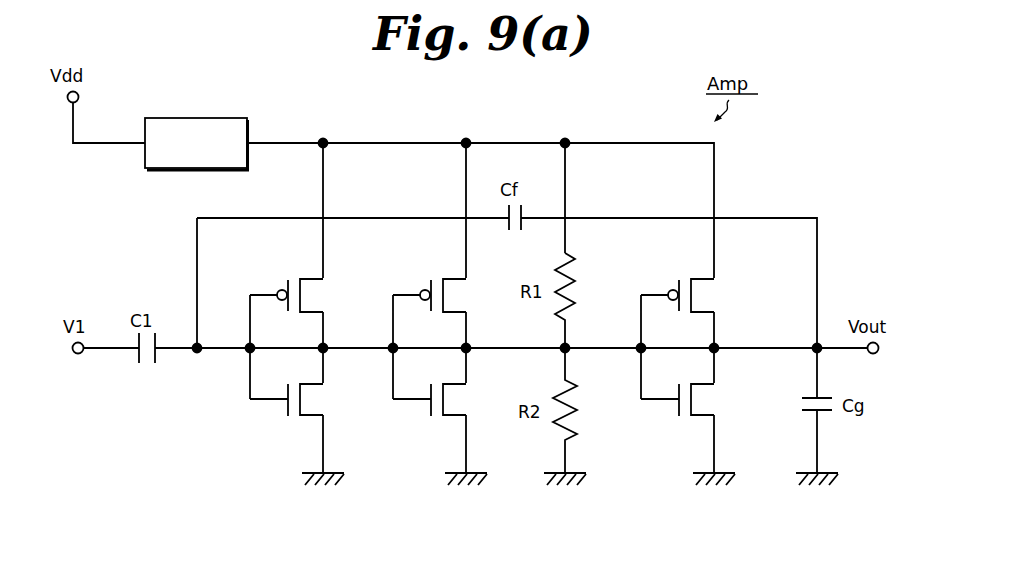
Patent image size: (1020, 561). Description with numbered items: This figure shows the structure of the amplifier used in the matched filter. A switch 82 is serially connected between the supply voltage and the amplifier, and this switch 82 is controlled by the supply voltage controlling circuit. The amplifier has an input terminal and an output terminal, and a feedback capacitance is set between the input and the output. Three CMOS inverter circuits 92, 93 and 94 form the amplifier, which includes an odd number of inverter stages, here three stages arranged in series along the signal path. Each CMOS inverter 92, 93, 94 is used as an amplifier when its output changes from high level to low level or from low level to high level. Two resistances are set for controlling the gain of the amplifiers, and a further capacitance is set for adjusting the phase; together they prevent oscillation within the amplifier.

The switch 82 is at (177, 118).
The CMOS inverter circuit 92 is at (270, 284).
The CMOS inverter circuit 93 is at (413, 284).
The CMOS inverter circuit 94 is at (655, 284).